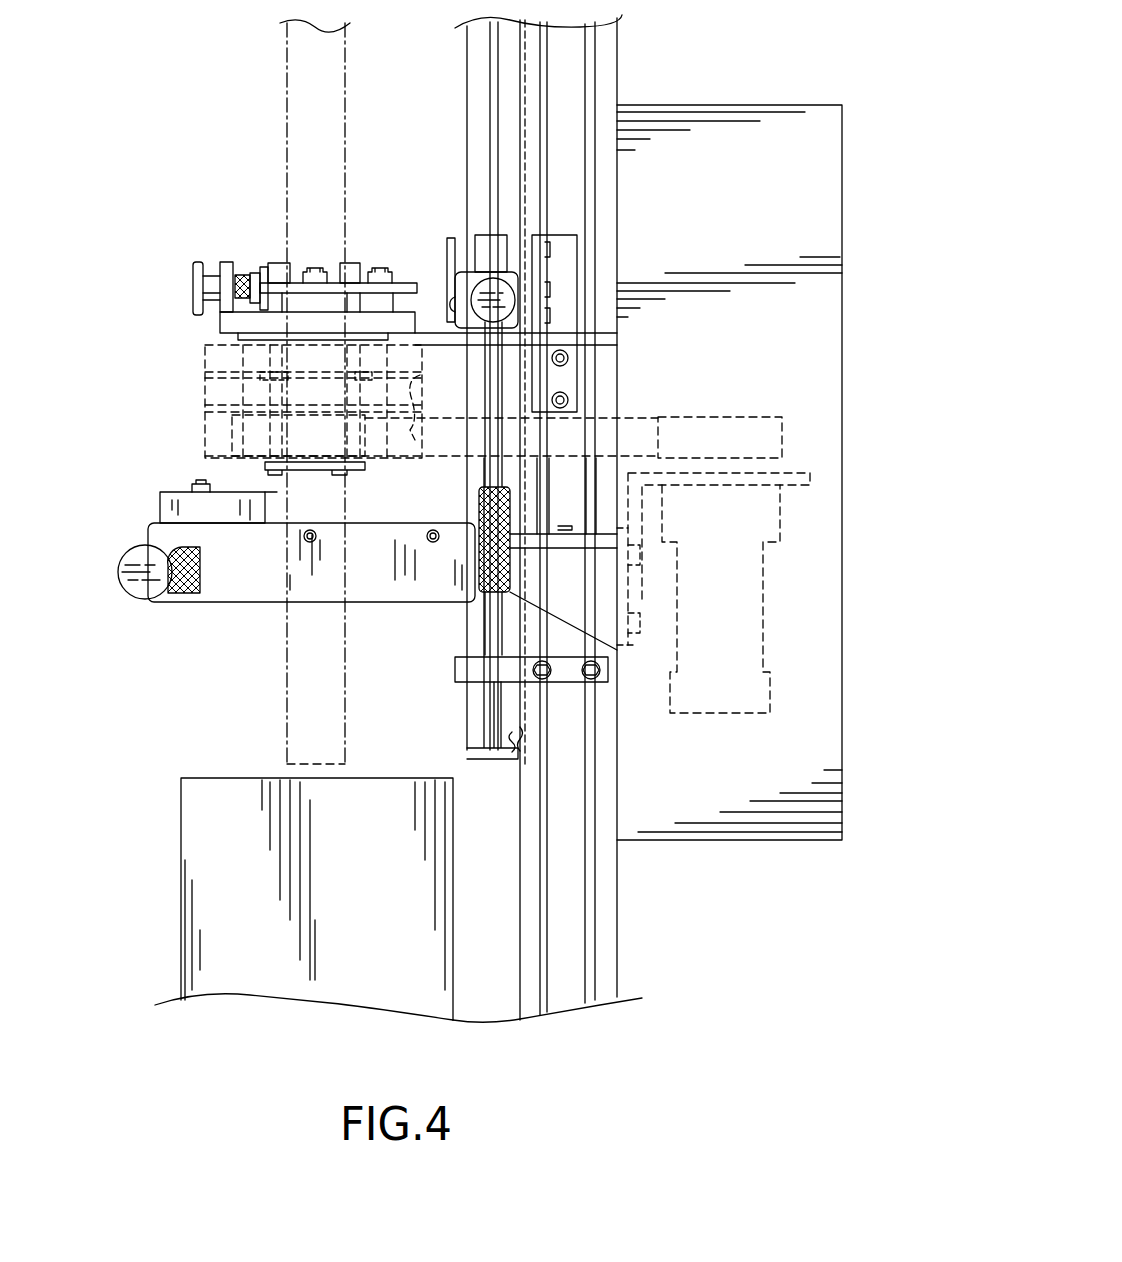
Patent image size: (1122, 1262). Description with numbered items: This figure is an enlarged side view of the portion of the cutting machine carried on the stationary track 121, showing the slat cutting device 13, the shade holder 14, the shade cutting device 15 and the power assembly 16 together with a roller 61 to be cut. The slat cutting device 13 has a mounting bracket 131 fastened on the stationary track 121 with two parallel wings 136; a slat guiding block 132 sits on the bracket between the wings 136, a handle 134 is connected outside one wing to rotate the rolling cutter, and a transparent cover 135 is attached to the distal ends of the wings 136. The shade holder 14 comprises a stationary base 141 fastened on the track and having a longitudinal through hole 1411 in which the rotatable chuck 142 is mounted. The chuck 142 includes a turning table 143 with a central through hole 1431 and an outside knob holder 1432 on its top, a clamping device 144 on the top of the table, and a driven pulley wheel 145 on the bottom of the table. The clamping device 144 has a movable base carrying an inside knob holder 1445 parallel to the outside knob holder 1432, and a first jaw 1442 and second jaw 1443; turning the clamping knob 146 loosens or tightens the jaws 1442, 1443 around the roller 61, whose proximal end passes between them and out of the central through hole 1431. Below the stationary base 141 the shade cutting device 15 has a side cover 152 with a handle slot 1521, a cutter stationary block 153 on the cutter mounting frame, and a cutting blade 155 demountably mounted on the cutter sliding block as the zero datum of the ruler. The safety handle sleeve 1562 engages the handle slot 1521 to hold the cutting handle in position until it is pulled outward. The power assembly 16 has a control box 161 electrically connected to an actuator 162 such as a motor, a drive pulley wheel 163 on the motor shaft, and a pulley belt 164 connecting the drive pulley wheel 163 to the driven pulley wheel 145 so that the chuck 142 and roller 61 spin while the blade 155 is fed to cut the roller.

The slat cutting device 13 is at (529, 465).
The shade holder 14 is at (272, 296).
The shade cutting device 15 is at (250, 558).
The power assembly 16 is at (777, 88).
The roller 61 is at (305, 68).
The stationary track 121 is at (608, 57).
The mounting bracket 131 is at (518, 275).
The slat guiding block 132 is at (495, 257).
The handle 134 is at (490, 405).
The transparent cover 135 is at (478, 288).
The wings 136 is at (462, 295).
The stationary base 141 is at (207, 375).
The rotatable chuck 142 is at (357, 258).
The turning table 143 is at (232, 322).
The clamping device 144 is at (255, 257).
The driven pulley wheel 145 is at (245, 414).
The clamping knob 146 is at (198, 283).
The side cover 152 is at (372, 592).
The cutter stationary block 153 is at (178, 513).
The cutting blade 155 is at (278, 492).
The control box 161 is at (805, 229).
The actuator 162 is at (743, 605).
The drive pulley wheel 163 is at (755, 418).
The pulley belt 164 is at (635, 433).
The longitudinal through hole 1411 is at (448, 414).
The central through hole 1431 is at (275, 392).
The outside knob holder 1432 is at (228, 278).
The first jaw 1442 is at (282, 262).
The second jaw 1443 is at (350, 262).
The inside knob holder 1445 is at (245, 282).
The handle slot 1521 is at (198, 568).
The safety handle sleeve 1562 is at (138, 582).